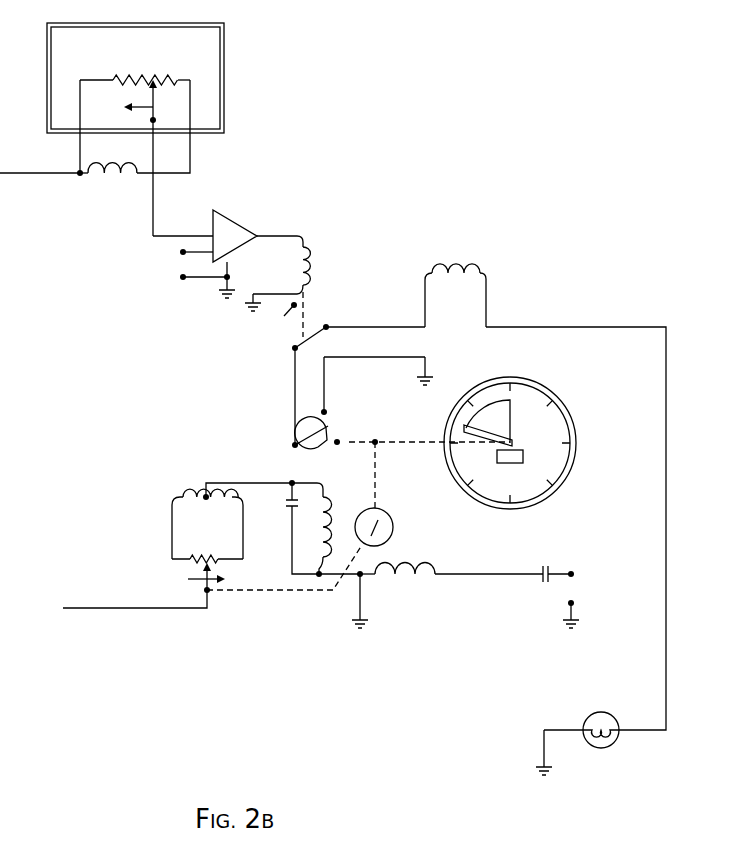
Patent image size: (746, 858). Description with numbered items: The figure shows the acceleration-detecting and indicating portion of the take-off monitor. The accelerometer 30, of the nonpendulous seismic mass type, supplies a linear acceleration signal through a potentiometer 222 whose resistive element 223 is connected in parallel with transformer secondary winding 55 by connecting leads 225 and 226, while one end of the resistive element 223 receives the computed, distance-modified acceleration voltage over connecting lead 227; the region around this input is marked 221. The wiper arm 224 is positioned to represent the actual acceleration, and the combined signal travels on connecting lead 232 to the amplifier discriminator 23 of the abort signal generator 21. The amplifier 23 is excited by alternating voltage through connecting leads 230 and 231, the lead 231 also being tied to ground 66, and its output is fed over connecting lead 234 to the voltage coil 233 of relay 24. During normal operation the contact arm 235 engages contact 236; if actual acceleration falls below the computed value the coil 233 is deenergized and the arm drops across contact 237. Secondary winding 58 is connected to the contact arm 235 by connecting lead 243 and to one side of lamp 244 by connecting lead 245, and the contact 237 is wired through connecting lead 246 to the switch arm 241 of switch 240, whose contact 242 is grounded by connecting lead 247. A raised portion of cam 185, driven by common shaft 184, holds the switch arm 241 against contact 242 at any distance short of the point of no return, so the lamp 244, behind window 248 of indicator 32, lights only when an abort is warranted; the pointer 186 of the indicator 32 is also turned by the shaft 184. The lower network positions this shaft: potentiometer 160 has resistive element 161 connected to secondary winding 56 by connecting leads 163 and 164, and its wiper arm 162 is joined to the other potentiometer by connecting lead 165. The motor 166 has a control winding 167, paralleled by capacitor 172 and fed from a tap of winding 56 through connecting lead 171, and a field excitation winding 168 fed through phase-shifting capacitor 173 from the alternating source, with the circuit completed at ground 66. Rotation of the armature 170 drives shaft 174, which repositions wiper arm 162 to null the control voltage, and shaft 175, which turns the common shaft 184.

The accelerometer 30 is at (264, 75).
The potentiometer 222 is at (144, 54).
The resistive element 223 is at (174, 82).
The wiper arm 224 is at (170, 158).
The connecting lead 225 is at (82, 106).
The connecting lead 226 is at (190, 162).
The connecting lead 227 is at (50, 172).
The transformer secondary winding 55 is at (106, 189).
The circuit section 221 is at (38, 214).
The connecting lead 232 is at (153, 192).
The amplifier discriminator 23 is at (214, 210).
The abort signal generator 21 is at (280, 260).
The connecting lead 230 is at (181, 250).
The connecting lead 231 is at (196, 286).
The ground 66 is at (233, 282).
The connecting lead 234 is at (267, 236).
The voltage coil 233 is at (310, 256).
The relay 24 is at (370, 268).
The contact arm 235 is at (311, 336).
The contact 236 is at (281, 317).
The contact 237 is at (291, 352).
The connecting lead 243 is at (383, 327).
The secondary winding 58 is at (456, 265).
The connecting lead 245 is at (666, 492).
The connecting lead 247 is at (364, 357).
The connecting lead 246 is at (293, 390).
The contact 242 is at (332, 405).
The switch 240 is at (271, 438).
The switch arm 241 is at (310, 435).
The cam 185 is at (350, 436).
The common shaft 184 is at (408, 442).
The indicator 32 is at (593, 389).
The pointer 186 is at (501, 436).
The window 248 is at (537, 442).
The lamp 244 is at (614, 744).
The potentiometer 160 is at (222, 546).
The secondary winding 56 is at (200, 496).
The connecting lead 171 is at (246, 482).
The connecting lead 164 is at (240, 519).
The connecting lead 163 is at (172, 533).
The resistive element 161 is at (208, 558).
The wiper arm 162 is at (196, 575).
The connecting lead 165 is at (110, 608).
The shaft 174 is at (284, 581).
The capacitor 172 is at (287, 514).
The control winding 167 is at (324, 520).
The armature 170 is at (383, 512).
The shaft 175 is at (375, 502).
The motor 166 is at (458, 533).
The field excitation winding 168 is at (409, 576).
The capacitor 173 is at (544, 565).